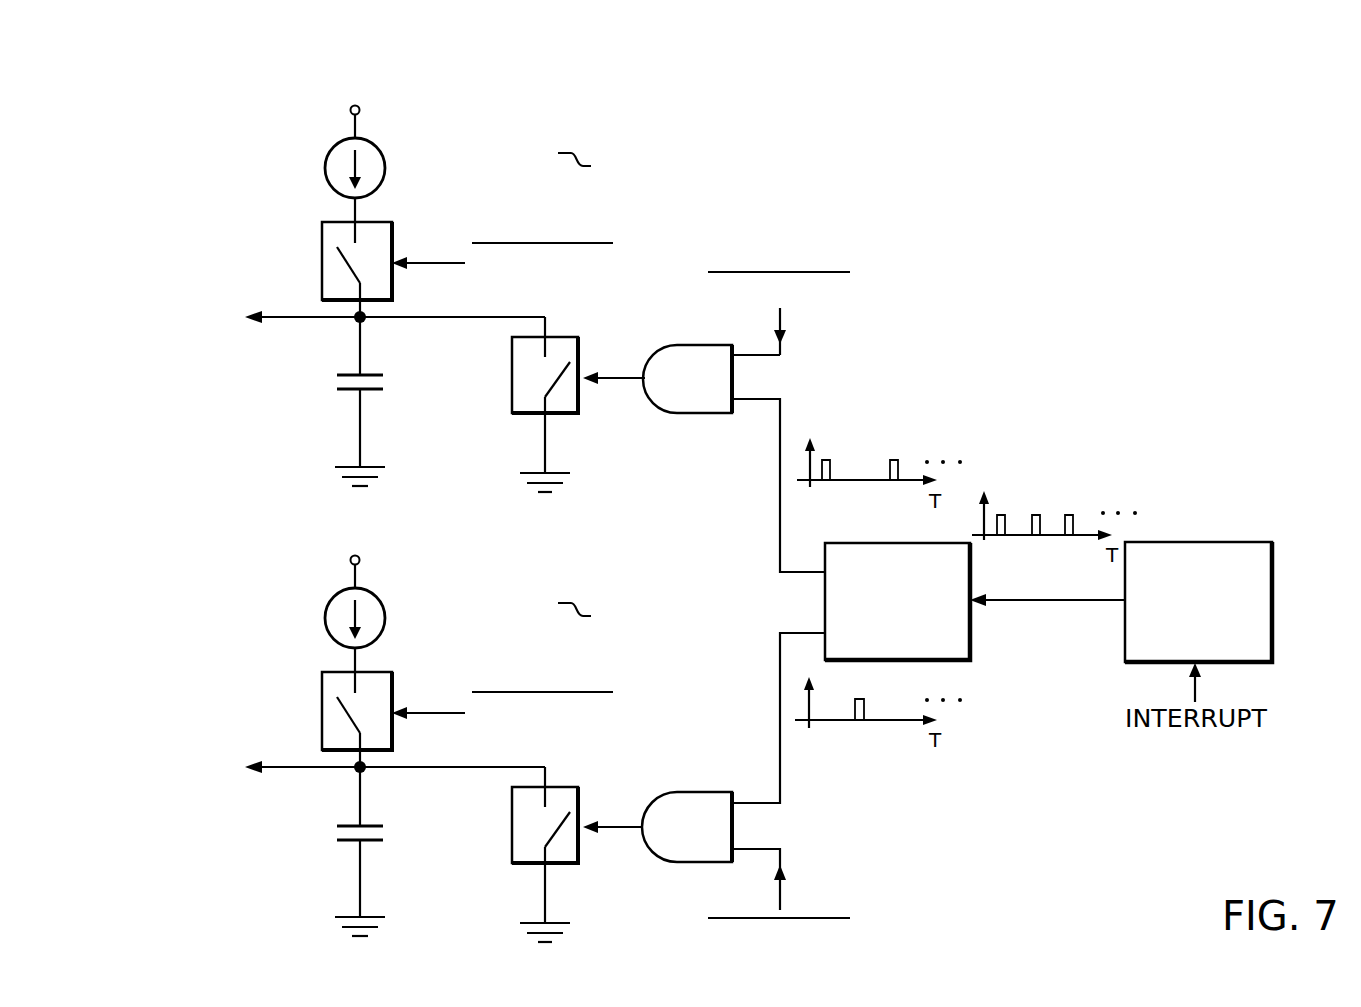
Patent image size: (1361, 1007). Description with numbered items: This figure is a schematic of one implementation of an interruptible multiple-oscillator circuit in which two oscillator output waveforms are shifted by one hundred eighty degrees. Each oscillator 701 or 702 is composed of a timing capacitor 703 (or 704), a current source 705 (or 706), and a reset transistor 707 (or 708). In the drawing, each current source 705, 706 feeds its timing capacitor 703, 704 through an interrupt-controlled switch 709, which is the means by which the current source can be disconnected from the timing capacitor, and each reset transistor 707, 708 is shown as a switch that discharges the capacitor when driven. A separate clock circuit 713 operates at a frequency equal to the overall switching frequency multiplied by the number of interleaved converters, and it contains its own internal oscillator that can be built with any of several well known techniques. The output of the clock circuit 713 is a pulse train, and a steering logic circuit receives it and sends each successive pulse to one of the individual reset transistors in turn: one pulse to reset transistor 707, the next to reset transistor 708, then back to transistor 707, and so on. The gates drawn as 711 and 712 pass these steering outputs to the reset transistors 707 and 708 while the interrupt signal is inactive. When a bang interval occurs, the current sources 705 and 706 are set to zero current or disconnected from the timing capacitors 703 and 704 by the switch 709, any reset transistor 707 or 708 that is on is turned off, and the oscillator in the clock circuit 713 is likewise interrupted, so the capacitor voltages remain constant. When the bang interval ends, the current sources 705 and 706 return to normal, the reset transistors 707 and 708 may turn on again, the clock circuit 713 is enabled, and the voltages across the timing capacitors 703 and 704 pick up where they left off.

The oscillator 701 is at (578, 160).
The oscillator 702 is at (516, 740).
The timing capacitor 703 is at (350, 391).
The timing capacitor 704 is at (336, 851).
The current source 705 is at (386, 168).
The current source 706 is at (388, 618).
The reset transistor 707 is at (567, 415).
The reset transistor 708 is at (557, 855).
The charging switch 709 is at (322, 269).
The AND gate 711 is at (705, 415).
The AND gate 712 is at (662, 852).
The clock circuit 713 is at (1196, 541).